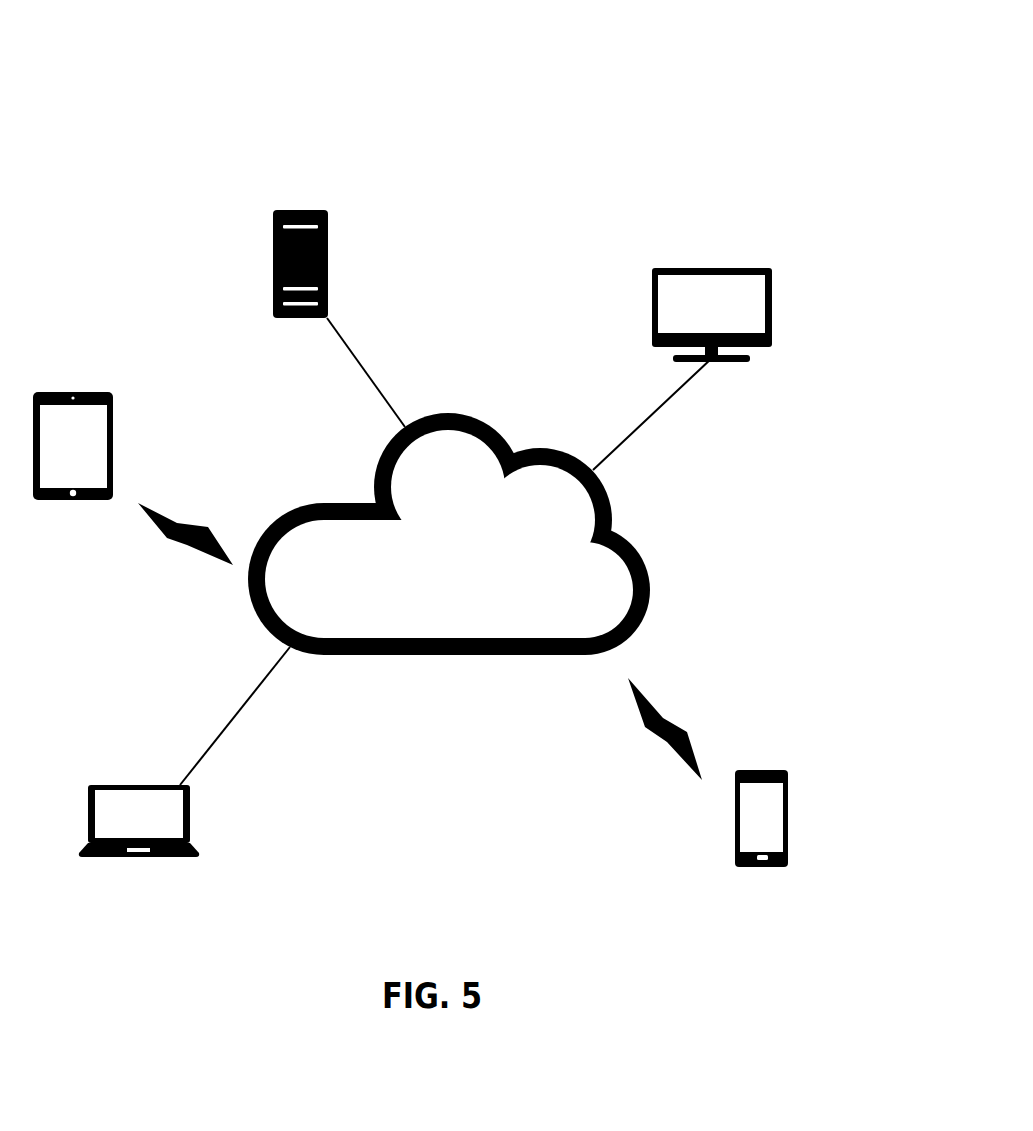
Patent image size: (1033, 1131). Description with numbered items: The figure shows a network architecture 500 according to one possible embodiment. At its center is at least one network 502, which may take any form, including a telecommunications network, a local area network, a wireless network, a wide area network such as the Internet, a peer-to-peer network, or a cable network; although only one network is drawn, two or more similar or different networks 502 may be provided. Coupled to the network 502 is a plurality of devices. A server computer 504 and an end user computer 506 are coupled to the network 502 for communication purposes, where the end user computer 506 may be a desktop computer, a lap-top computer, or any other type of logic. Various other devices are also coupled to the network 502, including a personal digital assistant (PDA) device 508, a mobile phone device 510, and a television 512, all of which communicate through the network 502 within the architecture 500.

The network architecture 500 is at (74, 81).
The network 502 is at (460, 655).
The server computer 504 is at (300, 210).
The end user computer 506 is at (135, 785).
The personal digital assistant (PDA) device 508 is at (76, 392).
The mobile phone device 510 is at (752, 770).
The television 512 is at (717, 268).